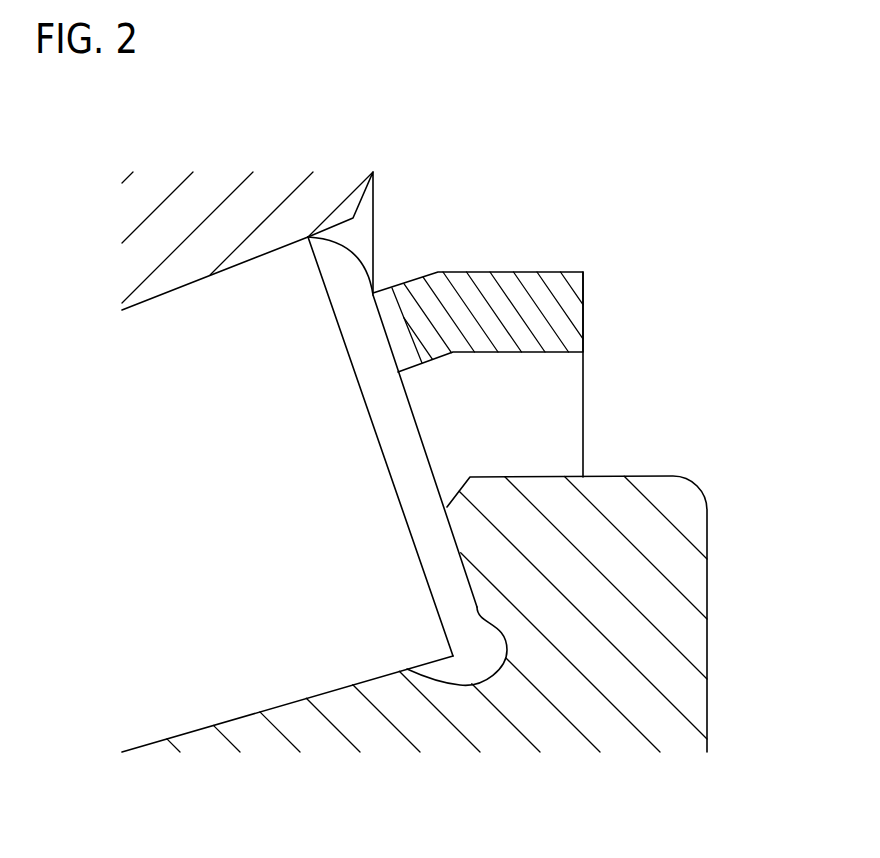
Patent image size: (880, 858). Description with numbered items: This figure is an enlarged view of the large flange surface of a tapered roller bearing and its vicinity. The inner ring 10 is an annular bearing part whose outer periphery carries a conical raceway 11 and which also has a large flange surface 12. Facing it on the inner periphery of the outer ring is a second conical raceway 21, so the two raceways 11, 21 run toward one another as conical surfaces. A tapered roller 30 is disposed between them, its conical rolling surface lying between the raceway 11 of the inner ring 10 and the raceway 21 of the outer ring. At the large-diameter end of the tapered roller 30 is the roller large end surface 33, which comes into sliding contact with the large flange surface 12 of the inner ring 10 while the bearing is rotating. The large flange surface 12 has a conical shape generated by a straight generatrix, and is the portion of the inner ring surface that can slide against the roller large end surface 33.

The inner ring 10 is at (708, 527).
The raceway 11 is at (247, 715).
The large flange surface 12 is at (448, 520).
The raceway 21 is at (197, 287).
The tapered roller 30 is at (253, 258).
The roller large end surface 33 is at (460, 563).